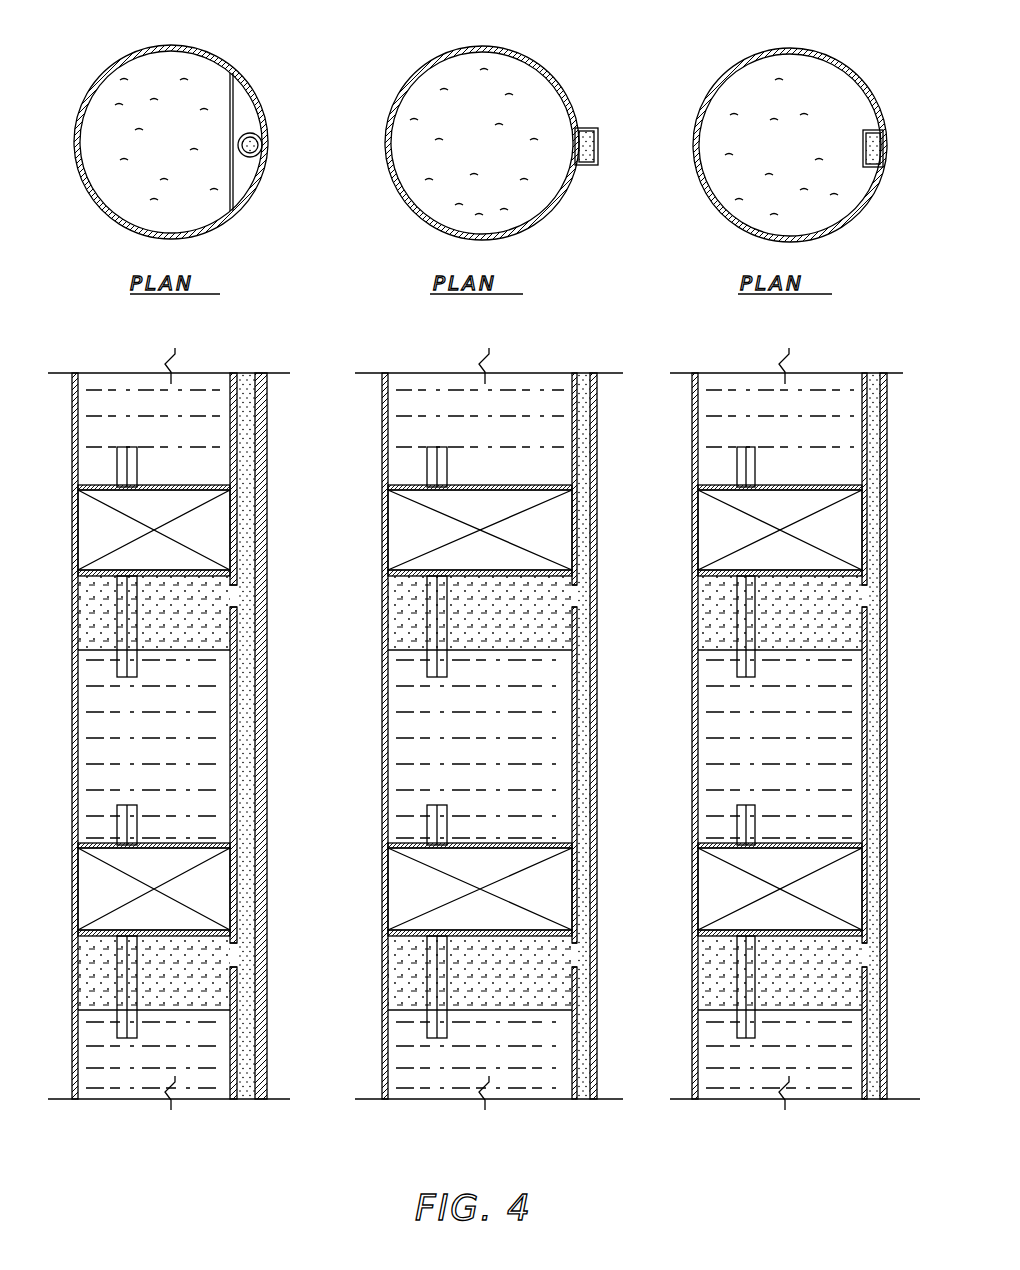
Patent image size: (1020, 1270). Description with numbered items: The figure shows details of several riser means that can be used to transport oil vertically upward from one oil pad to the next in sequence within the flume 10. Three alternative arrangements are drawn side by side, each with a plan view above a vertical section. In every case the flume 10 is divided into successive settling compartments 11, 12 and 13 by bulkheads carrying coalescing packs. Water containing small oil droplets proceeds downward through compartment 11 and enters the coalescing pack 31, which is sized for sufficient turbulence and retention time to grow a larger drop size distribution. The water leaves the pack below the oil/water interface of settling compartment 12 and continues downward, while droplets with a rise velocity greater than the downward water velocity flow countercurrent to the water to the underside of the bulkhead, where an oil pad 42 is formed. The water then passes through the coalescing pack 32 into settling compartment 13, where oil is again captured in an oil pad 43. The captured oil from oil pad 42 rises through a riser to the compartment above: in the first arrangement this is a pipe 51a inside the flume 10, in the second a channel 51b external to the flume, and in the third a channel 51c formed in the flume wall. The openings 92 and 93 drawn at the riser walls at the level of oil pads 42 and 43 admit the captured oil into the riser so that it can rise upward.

The flume 10 is at (75, 678).
The settling compartment 11 is at (88, 409).
The settling compartment 12 is at (88, 738).
The settling compartment 13 is at (88, 1053).
The coalescing pack 31 is at (88, 526).
The coalescing pack 32 is at (88, 884).
The oil pad 42 is at (88, 612).
The oil pad 43 is at (88, 970).
The pipe 51a is at (231, 417).
The channel 51b is at (598, 460).
The channel 51c is at (862, 413).
The upper tube opening 92 is at (231, 608).
The lower tube opening 93 is at (231, 961).